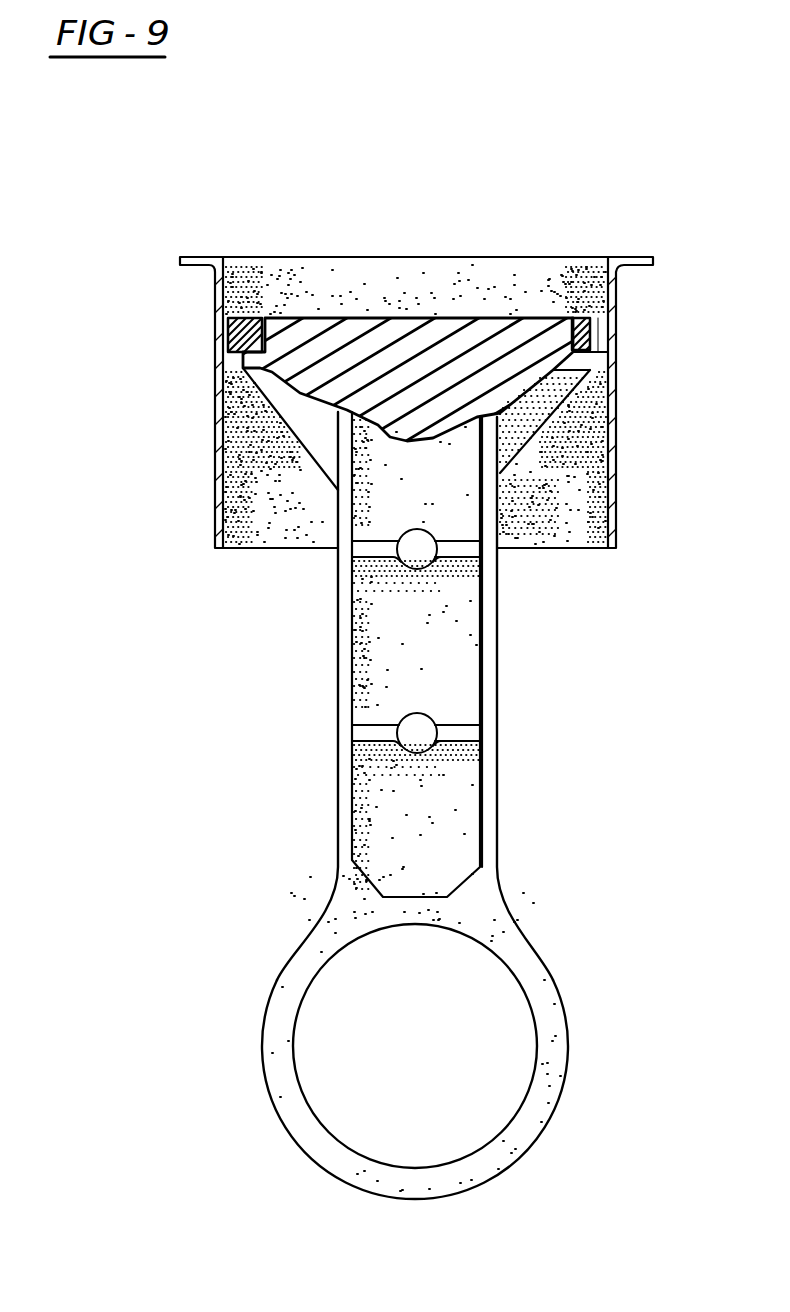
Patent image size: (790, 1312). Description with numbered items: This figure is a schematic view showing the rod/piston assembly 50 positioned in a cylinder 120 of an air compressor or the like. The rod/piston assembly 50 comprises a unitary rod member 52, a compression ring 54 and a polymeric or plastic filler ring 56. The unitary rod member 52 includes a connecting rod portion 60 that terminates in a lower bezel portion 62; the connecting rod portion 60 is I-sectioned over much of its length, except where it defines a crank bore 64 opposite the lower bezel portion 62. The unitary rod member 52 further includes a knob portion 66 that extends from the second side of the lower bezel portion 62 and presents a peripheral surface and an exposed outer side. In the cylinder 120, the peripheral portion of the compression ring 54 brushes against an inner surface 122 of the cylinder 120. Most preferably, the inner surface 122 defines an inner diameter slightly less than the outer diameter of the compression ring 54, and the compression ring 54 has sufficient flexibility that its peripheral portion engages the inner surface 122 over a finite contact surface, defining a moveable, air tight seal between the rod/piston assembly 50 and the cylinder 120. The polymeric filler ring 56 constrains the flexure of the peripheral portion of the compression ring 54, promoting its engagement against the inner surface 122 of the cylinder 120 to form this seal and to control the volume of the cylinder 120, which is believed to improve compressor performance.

The rod/piston assembly 50 is at (328, 658).
The unitary rod member 52 is at (390, 823).
The compression ring 54 is at (612, 340).
The polymeric filler ring 56 is at (577, 317).
The connecting rod portion 60 is at (465, 672).
The lower bezel portion 62 is at (320, 438).
The crank bore 64 is at (285, 1028).
The knob portion 66 is at (420, 323).
The cylinder 120 is at (217, 350).
The inner surface 122 is at (255, 290).